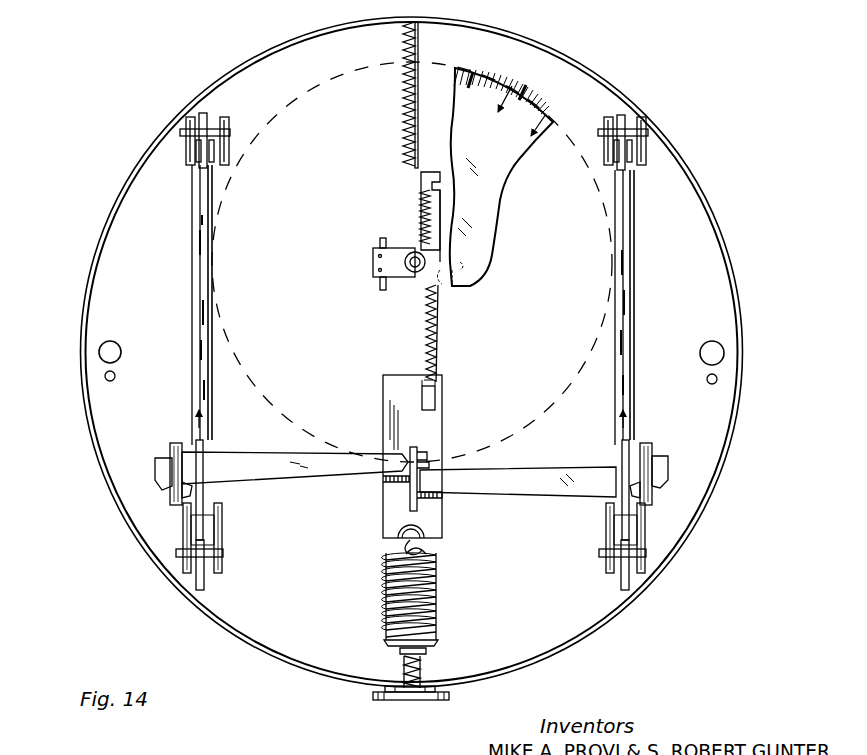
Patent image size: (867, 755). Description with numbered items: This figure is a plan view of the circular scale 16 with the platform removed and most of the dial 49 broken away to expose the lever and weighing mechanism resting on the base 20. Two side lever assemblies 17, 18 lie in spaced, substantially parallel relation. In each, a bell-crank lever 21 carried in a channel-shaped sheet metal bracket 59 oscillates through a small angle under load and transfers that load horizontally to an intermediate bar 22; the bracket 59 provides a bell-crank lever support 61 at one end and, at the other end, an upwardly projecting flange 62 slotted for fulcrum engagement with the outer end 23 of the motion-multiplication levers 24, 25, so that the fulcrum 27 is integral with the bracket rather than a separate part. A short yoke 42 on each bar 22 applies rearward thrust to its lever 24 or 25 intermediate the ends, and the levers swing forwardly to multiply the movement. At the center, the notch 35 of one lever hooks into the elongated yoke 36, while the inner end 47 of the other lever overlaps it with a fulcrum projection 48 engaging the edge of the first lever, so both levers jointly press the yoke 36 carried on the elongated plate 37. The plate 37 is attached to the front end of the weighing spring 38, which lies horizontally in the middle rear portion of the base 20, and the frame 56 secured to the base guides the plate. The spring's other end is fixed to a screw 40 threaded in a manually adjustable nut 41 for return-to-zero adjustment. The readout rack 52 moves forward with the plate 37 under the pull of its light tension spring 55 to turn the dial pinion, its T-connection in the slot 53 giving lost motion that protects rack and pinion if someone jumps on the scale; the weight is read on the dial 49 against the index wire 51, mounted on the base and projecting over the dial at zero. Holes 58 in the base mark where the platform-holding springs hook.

The scale 16 is at (690, 158).
The side lever assembly 17 is at (190, 246).
The side lever assembly 18 is at (636, 331).
The base 20 is at (336, 660).
The bell-crank lever 21 is at (220, 132).
The intermediate bar 22 is at (190, 353).
The outer end of motion-multiplication lever 23 is at (156, 470).
The motion-multiplication lever 24 is at (492, 494).
The motion-multiplication lever 25 is at (305, 482).
The fulcrum 27 is at (180, 492).
The notch 35 is at (426, 468).
The yoke 36 is at (420, 452).
The plate 37 is at (442, 410).
The weighing spring 38 is at (440, 600).
The screw 40 is at (420, 670).
The manually adjustable nut 41 is at (445, 702).
The yoke 42 is at (205, 446).
The inner end of lever 47 is at (396, 522).
The fulcrum projection 48 is at (406, 484).
The dial 49 is at (495, 112).
The index wire 51 is at (412, 152).
The rack 52 is at (440, 322).
The slot 53 is at (422, 400).
The tension spring 55 is at (404, 88).
The frame 56 is at (372, 262).
The spring hooking place 58 is at (99, 369).
The bracket 59 is at (218, 116).
The bell-crank lever support 61 is at (610, 142).
The upwardly projecting flange 62 is at (172, 452).